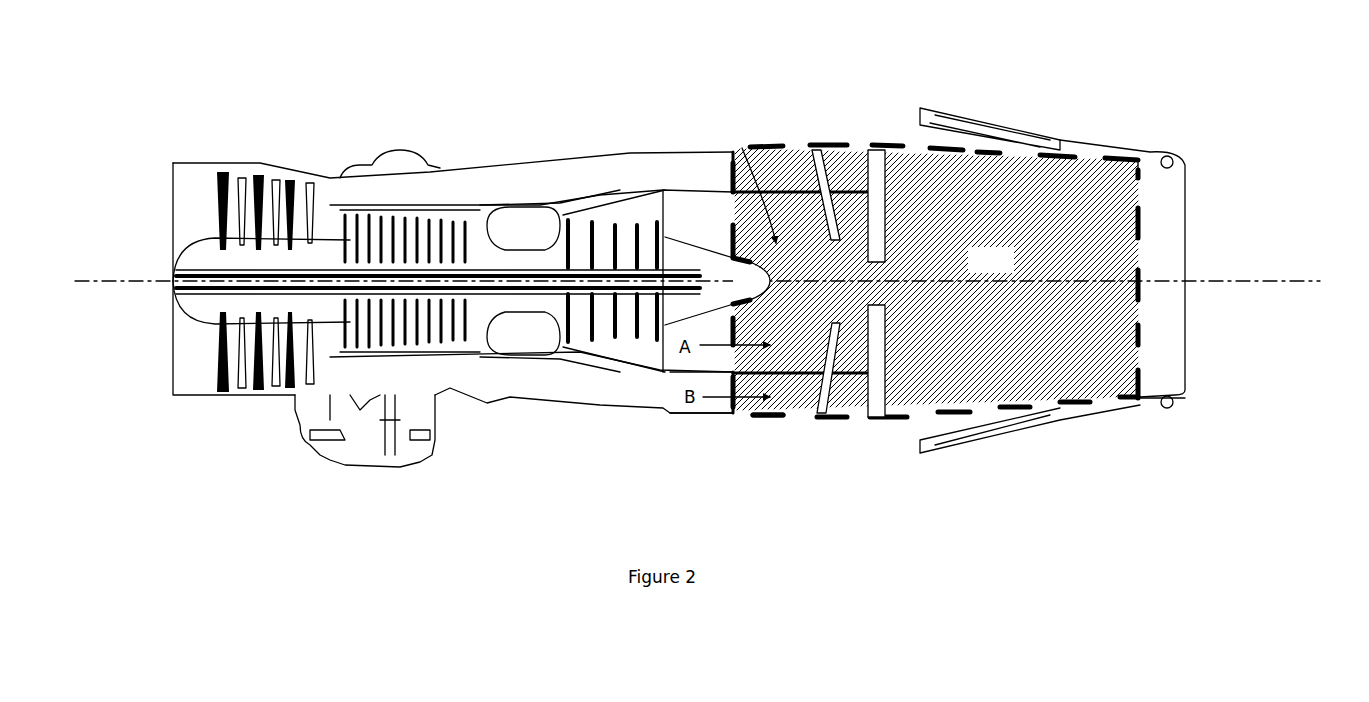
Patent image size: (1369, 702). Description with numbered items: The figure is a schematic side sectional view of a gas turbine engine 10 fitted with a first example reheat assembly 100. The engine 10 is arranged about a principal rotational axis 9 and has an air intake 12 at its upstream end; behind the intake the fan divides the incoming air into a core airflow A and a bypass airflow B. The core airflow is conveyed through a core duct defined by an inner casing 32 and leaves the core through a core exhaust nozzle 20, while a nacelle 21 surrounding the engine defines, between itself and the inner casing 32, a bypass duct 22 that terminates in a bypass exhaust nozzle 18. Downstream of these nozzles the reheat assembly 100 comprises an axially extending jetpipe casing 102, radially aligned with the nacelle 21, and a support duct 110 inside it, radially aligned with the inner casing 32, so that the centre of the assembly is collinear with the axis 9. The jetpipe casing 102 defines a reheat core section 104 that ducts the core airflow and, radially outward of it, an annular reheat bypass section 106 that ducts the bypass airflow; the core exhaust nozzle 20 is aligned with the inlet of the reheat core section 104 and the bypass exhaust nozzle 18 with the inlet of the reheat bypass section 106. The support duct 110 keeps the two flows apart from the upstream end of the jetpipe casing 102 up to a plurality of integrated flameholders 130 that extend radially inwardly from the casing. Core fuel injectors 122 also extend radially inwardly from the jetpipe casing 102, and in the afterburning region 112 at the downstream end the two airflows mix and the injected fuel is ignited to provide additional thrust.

The principal rotational axis 9 is at (100, 272).
The gas turbine engine 10 is at (251, 69).
The air intake 12 is at (182, 190).
The bypass exhaust nozzle 18 is at (696, 385).
The core exhaust nozzle 20 is at (690, 210).
The nacelle 21 is at (535, 163).
The bypass duct 22 is at (460, 378).
The inner casing 32 is at (493, 200).
The reheat assembly 100 is at (959, 239).
The jetpipe casing 102 is at (833, 140).
The reheat core section 104 is at (698, 160).
The reheat bypass section 106 is at (777, 420).
The support duct 110 is at (742, 148).
The afterburning region 112 is at (1007, 269).
The core fuel injectors 122 is at (827, 422).
The integrated flameholders 130 is at (883, 147).